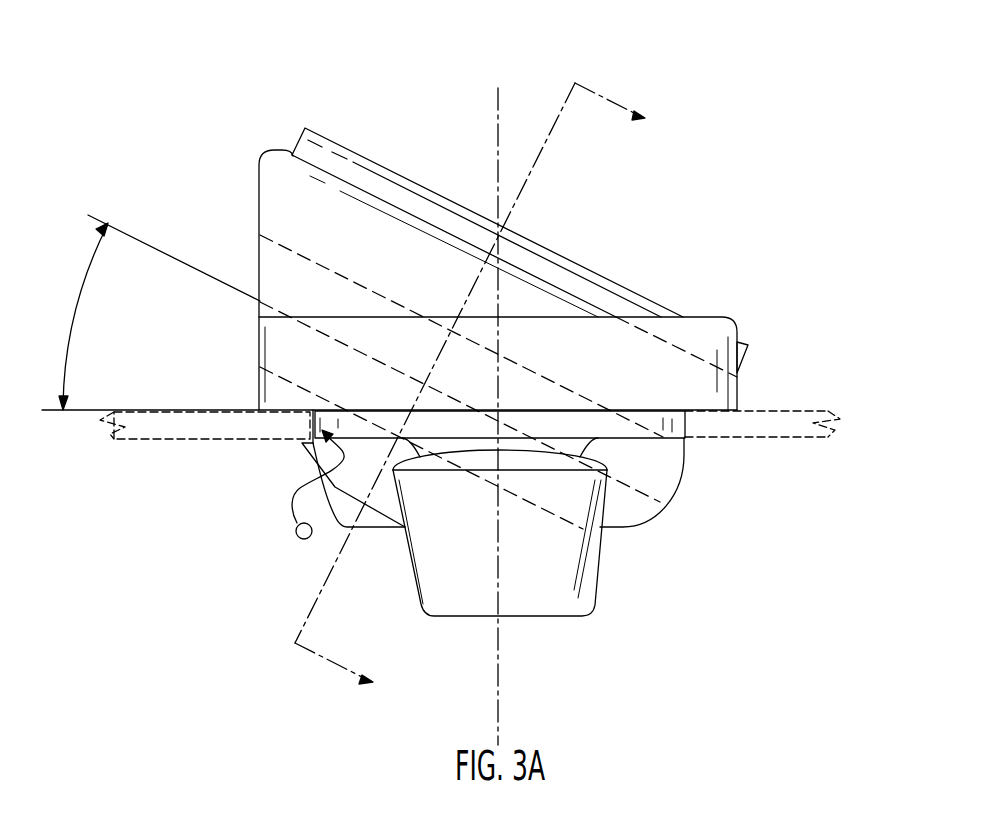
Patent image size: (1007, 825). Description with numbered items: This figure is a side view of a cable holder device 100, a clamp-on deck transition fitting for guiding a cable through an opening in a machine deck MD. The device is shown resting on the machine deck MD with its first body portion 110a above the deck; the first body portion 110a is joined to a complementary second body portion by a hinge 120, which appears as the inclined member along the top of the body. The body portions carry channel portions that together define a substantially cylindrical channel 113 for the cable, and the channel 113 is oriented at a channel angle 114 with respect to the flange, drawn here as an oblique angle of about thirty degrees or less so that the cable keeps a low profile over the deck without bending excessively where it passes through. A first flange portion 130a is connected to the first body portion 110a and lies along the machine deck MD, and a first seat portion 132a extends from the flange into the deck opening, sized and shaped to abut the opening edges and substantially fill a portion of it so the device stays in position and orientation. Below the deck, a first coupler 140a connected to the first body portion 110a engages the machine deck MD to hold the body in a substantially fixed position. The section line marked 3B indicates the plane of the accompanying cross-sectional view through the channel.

The cable holder device 100 is at (779, 93).
The first body portion 110a is at (283, 152).
The hinge 120 is at (375, 160).
The channel angle 114 is at (78, 306).
The first flange portion 130a is at (283, 395).
The first seat portion 132a is at (676, 423).
The channel 113 is at (702, 516).
The first coupler 140a is at (541, 618).
The machine deck MD is at (774, 410).
The section line 3B is at (483, 392).